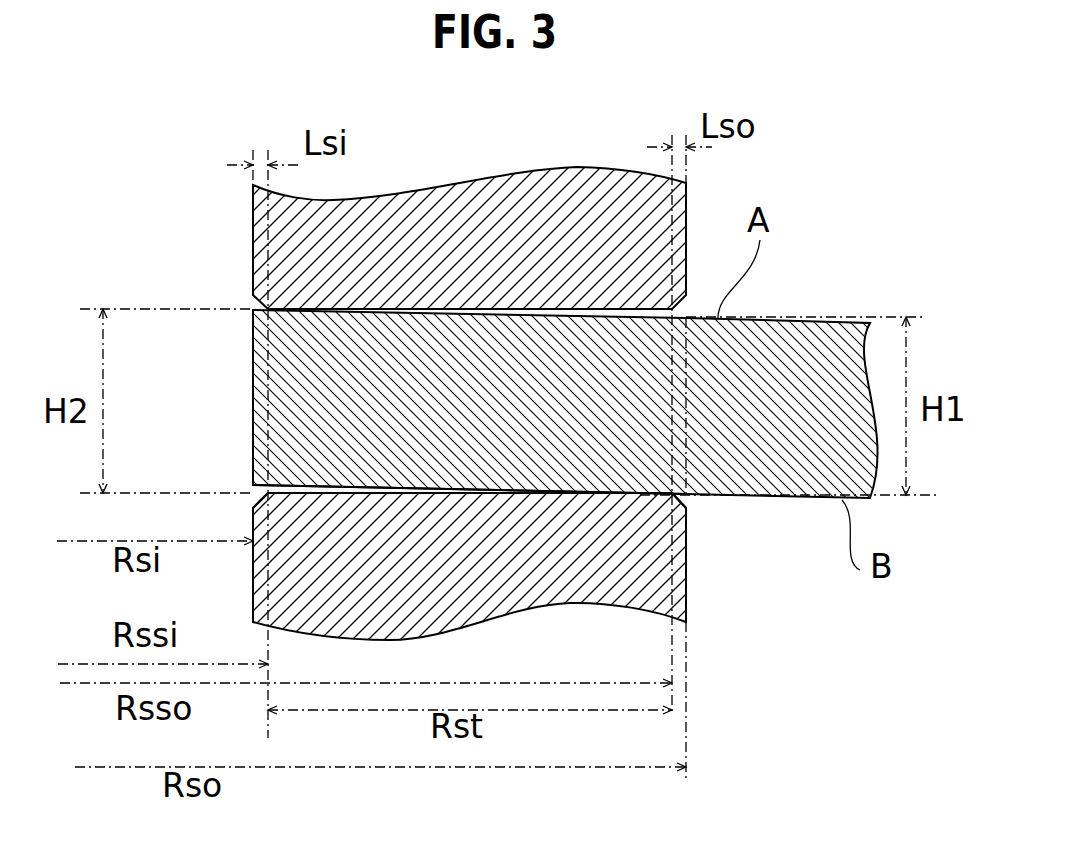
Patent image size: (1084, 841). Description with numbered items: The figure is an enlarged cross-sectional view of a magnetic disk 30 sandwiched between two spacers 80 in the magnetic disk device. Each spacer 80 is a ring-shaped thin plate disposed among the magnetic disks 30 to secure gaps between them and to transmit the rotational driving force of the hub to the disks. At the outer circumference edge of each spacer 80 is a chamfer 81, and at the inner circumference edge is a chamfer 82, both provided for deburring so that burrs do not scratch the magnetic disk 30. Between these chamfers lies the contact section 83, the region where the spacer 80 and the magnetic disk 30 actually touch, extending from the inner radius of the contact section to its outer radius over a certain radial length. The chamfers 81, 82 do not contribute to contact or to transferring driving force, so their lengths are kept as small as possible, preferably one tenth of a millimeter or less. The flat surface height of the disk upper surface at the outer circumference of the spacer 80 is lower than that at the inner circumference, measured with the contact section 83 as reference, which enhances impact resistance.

The magnetic disk 30 is at (770, 318).
The spacer 80 is at (253, 528).
The chamfer 81 is at (687, 502).
The chamfer 82 is at (252, 500).
The contact section 83 is at (468, 490).